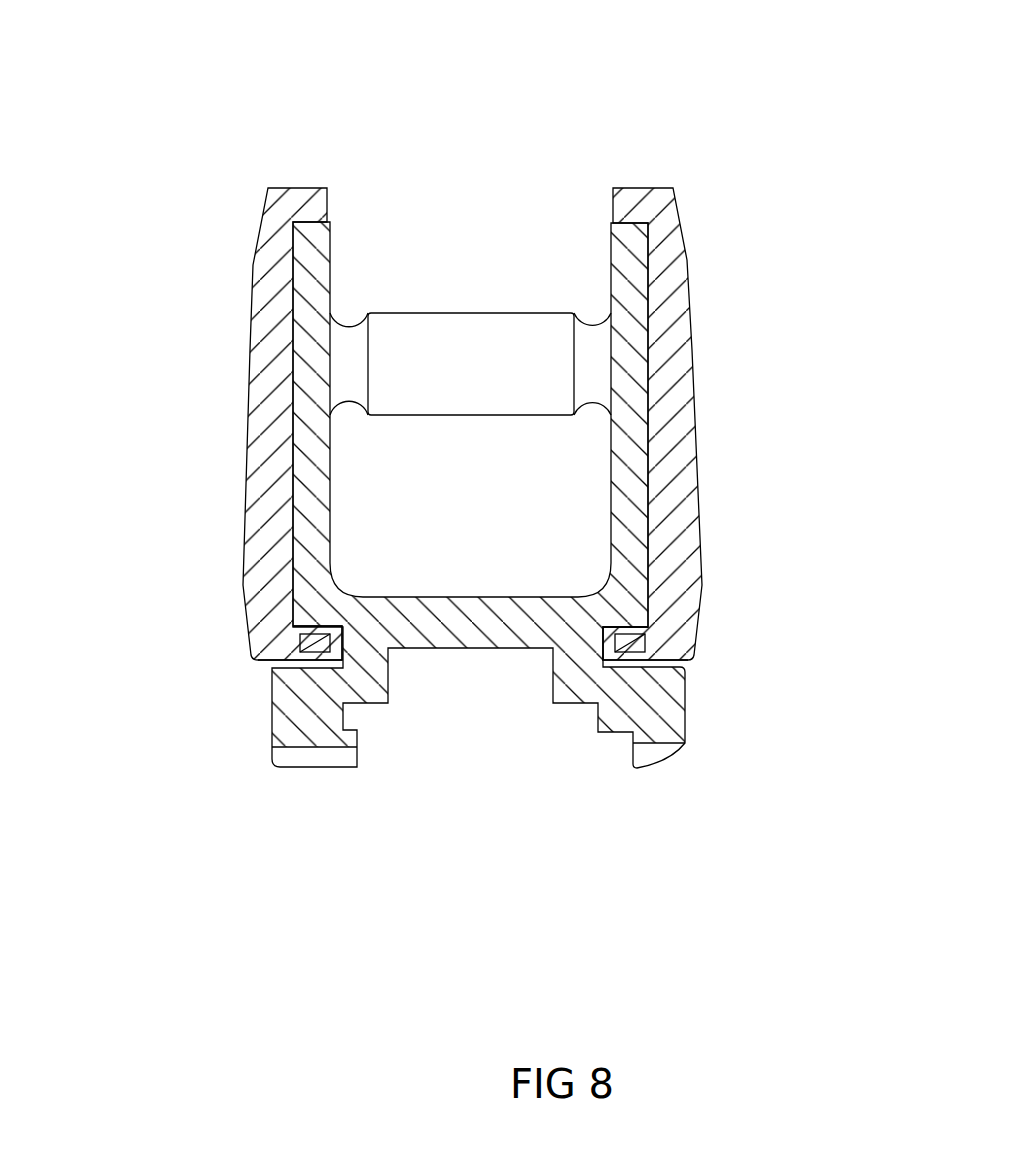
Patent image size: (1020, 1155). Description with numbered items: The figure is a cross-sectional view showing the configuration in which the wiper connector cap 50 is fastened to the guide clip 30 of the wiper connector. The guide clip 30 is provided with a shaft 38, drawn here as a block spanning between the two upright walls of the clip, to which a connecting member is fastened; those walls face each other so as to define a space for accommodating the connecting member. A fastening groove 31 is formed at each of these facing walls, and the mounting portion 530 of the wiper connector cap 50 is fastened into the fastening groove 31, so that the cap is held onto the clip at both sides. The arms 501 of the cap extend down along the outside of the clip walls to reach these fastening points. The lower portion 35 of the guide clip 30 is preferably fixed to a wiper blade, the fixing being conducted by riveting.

The guide clip 30 is at (477, 444).
The fastening groove 31 is at (288, 662).
The lower portion 35 is at (305, 740).
The shaft 38 is at (487, 330).
The wiper connector cap 50 is at (479, 338).
The sleeve arm 501 is at (255, 423).
The mounting portion 530 is at (300, 630).